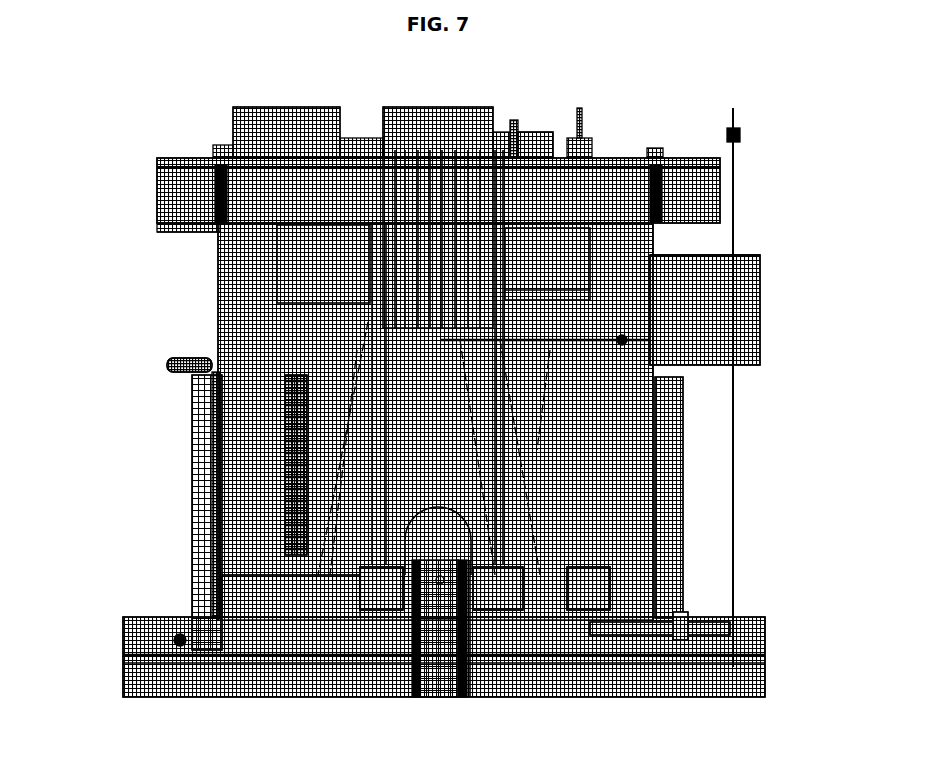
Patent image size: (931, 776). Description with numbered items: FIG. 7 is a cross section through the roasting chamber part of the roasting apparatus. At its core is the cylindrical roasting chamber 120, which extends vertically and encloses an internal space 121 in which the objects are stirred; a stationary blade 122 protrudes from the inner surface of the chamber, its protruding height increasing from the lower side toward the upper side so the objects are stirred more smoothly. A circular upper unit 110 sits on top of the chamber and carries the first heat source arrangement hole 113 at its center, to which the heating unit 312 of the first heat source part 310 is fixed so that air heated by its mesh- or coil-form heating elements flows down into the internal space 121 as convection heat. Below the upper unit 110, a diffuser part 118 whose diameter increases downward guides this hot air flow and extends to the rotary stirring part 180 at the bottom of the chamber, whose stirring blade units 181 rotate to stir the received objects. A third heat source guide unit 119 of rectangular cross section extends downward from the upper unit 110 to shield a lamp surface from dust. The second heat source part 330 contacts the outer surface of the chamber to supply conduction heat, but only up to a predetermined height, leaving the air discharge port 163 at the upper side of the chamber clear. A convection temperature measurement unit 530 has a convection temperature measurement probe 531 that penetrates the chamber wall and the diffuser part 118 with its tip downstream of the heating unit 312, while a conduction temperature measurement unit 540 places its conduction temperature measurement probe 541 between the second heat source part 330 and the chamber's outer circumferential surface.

The upper unit 110 is at (160, 205).
The first heat source arrangement hole 113 is at (495, 200).
The diffuser part 118 is at (367, 373).
The third heat source guide unit 119 is at (577, 270).
The roasting chamber 120 is at (220, 331).
The internal space 121 is at (235, 578).
The stationary blade 122 is at (232, 592).
The air discharge port 163 is at (690, 250).
The rotary stirring part 180 is at (402, 692).
The stirring blade unit 181 is at (513, 700).
The first heat source part 310 is at (494, 122).
The heating unit 312 is at (417, 200).
The second heat source part 330 is at (215, 483).
The convection temperature measurement unit 530 is at (590, 642).
The convection temperature measurement probe 531 is at (459, 697).
The conduction temperature measurement unit 540 is at (170, 378).
The conduction temperature measurement probe 541 is at (215, 433).